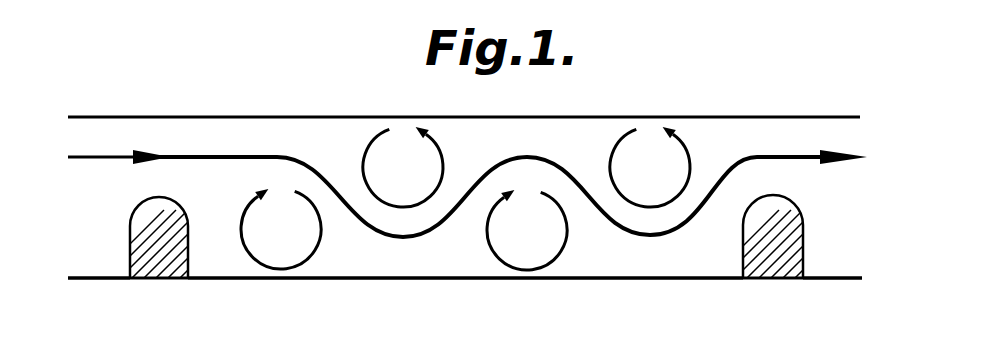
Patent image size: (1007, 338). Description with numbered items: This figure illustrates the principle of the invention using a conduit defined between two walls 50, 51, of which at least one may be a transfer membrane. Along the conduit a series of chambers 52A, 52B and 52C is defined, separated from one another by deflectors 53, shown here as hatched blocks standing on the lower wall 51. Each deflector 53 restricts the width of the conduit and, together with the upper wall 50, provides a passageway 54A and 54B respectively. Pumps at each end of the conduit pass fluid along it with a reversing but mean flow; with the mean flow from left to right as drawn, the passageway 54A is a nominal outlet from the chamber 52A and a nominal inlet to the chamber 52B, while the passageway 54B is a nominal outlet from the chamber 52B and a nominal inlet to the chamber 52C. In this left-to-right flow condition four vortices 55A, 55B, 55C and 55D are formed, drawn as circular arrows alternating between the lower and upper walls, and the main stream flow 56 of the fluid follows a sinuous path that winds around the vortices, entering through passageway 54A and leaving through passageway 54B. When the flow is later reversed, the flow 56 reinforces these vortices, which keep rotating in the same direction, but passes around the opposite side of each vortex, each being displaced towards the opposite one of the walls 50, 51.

The wall 50 is at (535, 115).
The wall 51 is at (558, 280).
The chamber 52A is at (100, 247).
The chamber 52B is at (340, 258).
The chamber 52C is at (843, 247).
The deflector 53 is at (157, 232).
The passageway 54A is at (185, 95).
The passageway 54B is at (800, 135).
The vortex 55A is at (278, 228).
The vortex 55B is at (398, 170).
The vortex 55C is at (526, 236).
The vortex 55D is at (648, 162).
The main stream flow 56 is at (418, 240).